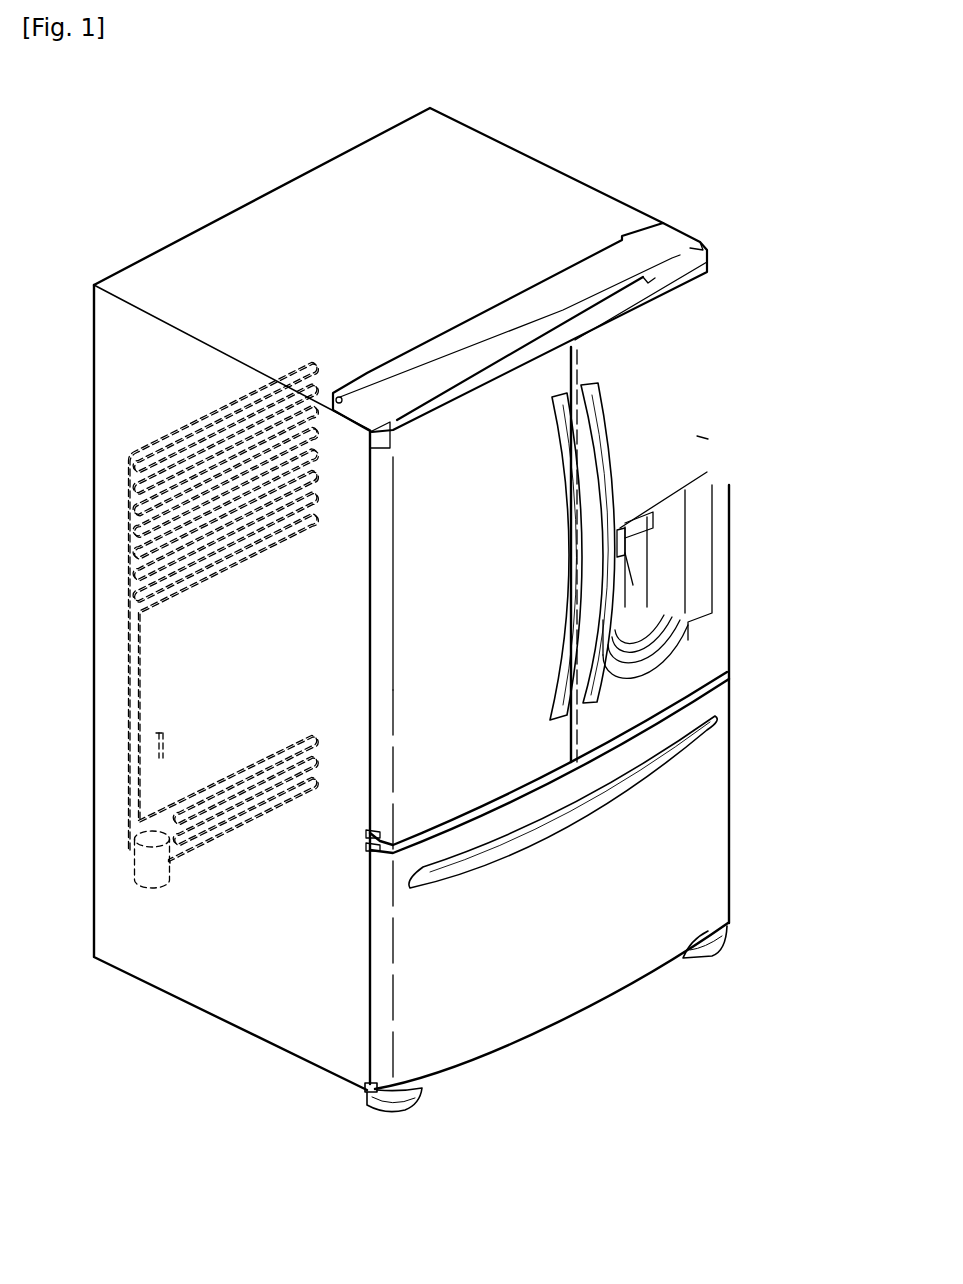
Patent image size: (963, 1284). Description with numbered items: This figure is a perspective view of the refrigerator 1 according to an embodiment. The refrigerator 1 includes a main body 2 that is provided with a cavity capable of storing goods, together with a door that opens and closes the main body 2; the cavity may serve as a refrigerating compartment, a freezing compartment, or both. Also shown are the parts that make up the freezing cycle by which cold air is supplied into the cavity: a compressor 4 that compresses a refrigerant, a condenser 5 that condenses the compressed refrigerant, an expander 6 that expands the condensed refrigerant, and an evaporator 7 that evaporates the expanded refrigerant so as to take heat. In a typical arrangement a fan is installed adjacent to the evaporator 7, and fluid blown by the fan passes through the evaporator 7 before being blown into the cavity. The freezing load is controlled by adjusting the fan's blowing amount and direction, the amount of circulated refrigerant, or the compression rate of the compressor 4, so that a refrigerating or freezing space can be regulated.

The refrigerator 1 is at (512, 124).
The main body 2 is at (621, 220).
The compressor 4 is at (135, 867).
The condenser 5 is at (232, 836).
The expander 6 is at (142, 757).
The evaporator 7 is at (187, 423).